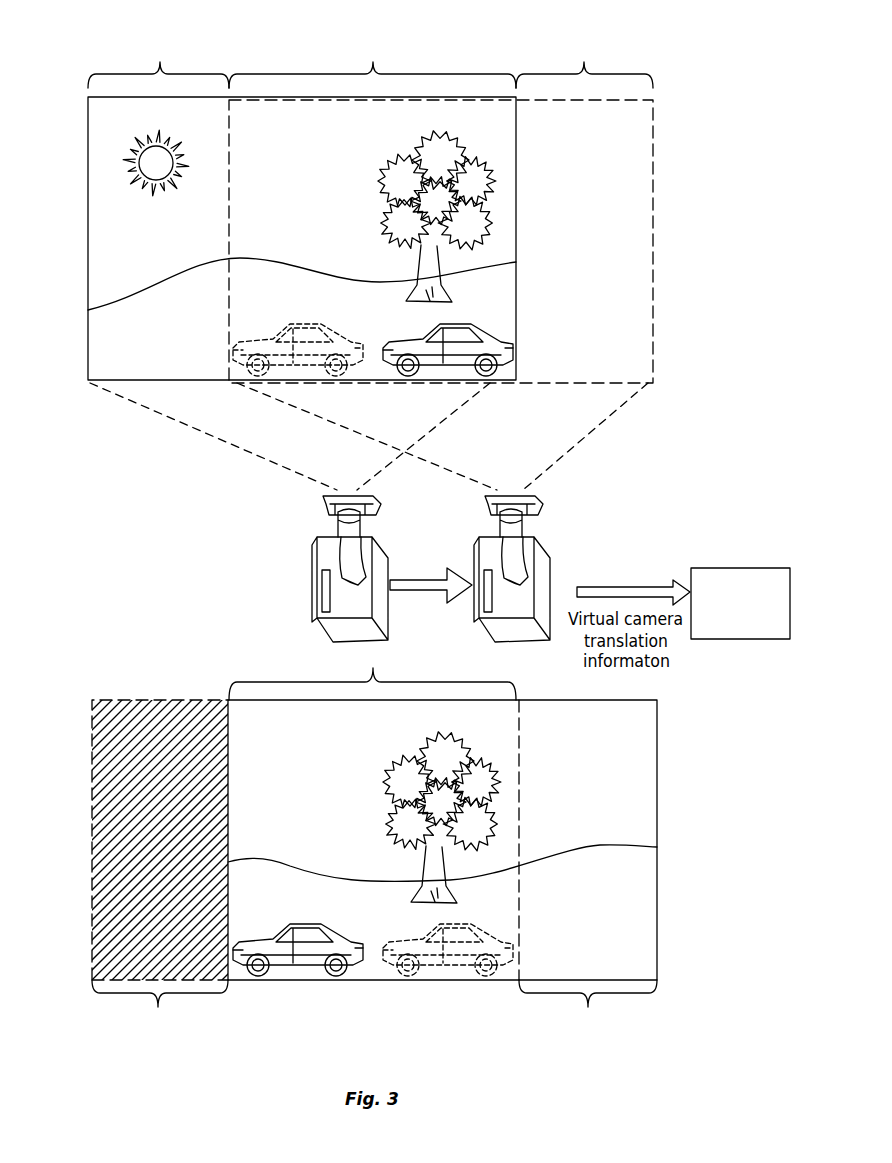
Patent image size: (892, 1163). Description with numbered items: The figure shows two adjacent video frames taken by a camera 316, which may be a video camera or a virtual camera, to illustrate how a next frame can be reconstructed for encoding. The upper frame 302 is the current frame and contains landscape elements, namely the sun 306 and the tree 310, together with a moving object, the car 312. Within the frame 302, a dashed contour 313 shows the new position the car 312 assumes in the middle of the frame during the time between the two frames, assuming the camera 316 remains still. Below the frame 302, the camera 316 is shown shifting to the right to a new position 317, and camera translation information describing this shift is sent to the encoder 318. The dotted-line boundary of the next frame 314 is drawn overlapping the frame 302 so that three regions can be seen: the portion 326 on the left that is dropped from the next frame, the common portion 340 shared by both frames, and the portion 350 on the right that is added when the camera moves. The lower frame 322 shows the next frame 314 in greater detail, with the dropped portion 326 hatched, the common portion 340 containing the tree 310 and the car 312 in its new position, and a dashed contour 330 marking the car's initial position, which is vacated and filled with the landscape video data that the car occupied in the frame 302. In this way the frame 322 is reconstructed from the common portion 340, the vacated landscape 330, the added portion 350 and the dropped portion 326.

The frame 302 is at (88, 337).
The sun 306 is at (115, 178).
The tree 310 is at (478, 160).
The car 312 is at (495, 336).
The contour of the car 313 is at (295, 360).
The next frame 314 is at (653, 320).
The camera 316 is at (315, 550).
The position 317 is at (546, 552).
The encoder 318 is at (705, 568).
The next frame 322 is at (657, 923).
The portion 326 is at (256, 544).
The contour of the car 330 is at (443, 963).
The common portion 340 is at (349, 358).
The portion to add 350 is at (586, 537).